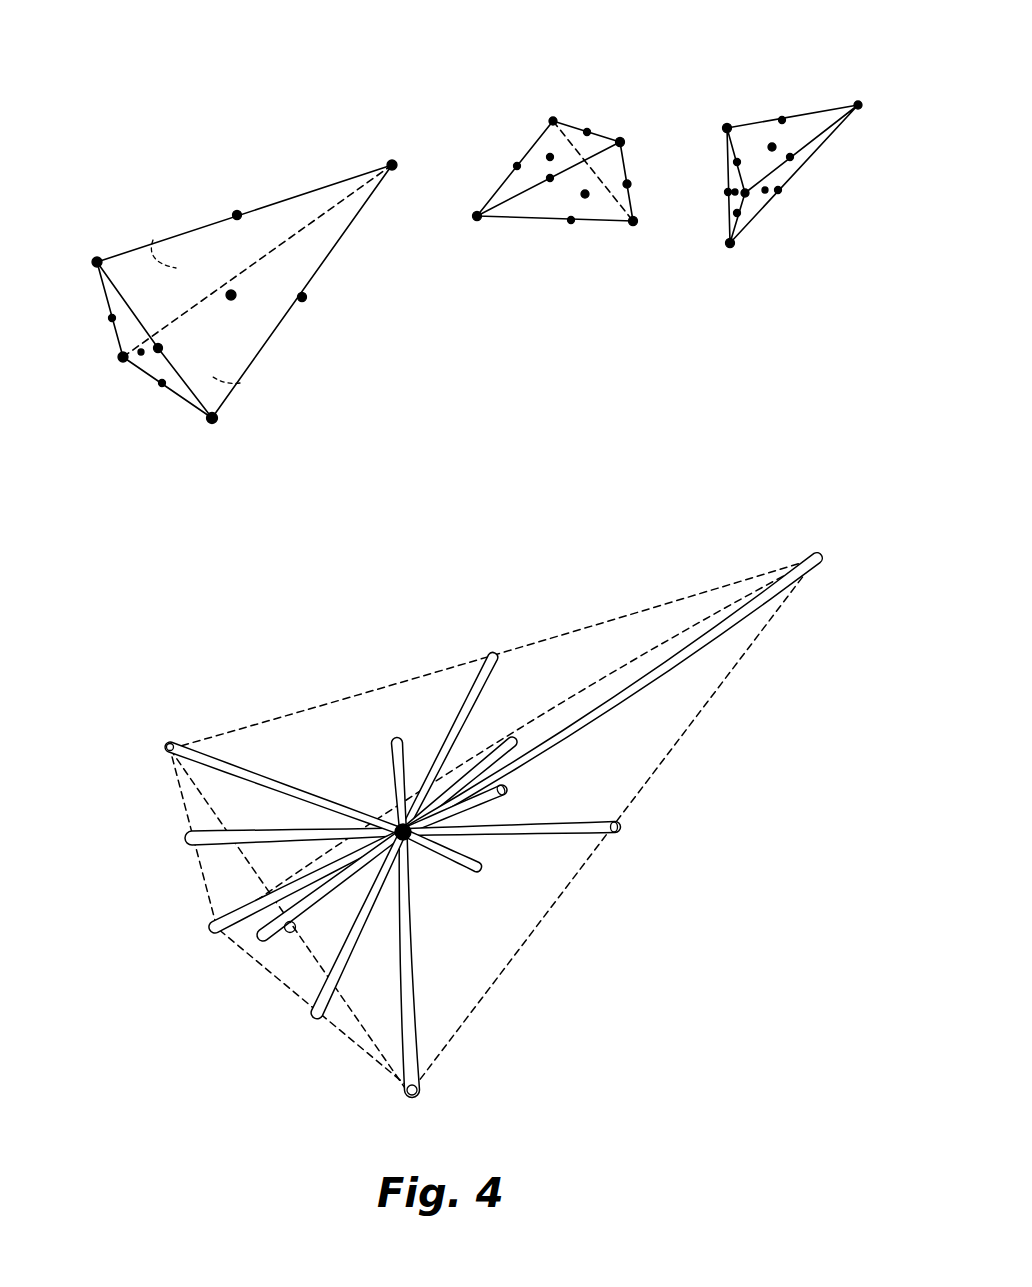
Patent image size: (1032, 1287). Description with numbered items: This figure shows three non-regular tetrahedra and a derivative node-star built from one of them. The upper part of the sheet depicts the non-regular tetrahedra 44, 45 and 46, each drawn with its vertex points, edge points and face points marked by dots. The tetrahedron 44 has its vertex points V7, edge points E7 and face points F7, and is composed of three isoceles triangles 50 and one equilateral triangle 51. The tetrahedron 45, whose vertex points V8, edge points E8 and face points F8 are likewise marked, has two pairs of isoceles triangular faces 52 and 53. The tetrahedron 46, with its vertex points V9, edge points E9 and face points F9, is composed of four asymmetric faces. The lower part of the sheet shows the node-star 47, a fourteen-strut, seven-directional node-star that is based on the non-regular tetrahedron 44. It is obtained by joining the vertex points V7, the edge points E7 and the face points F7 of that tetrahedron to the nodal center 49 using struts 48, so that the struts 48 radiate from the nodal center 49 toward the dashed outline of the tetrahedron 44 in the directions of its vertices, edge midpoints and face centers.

The non-regular tetrahedron 44 is at (113, 410).
The non-regular tetrahedron 45 is at (487, 258).
The non-regular tetrahedron 46 is at (706, 258).
The node-star 47 is at (486, 837).
The struts 48 is at (503, 738).
The nodal center 49 is at (412, 850).
The isoceles triangles 50 is at (153, 240).
The equilateral triangle 51 is at (130, 327).
The isoceles triangular faces 52 is at (518, 212).
The isoceles triangular faces 53 is at (559, 137).
The vertex points V7 is at (400, 160).
The edge points E7 is at (245, 208).
The face points F7 is at (232, 306).
The vertex points V8 is at (627, 137).
The edge points E8 is at (638, 182).
The face points F8 is at (542, 153).
The vertex points V9 is at (862, 96).
The edge points E9 is at (788, 192).
The face points F9 is at (765, 137).